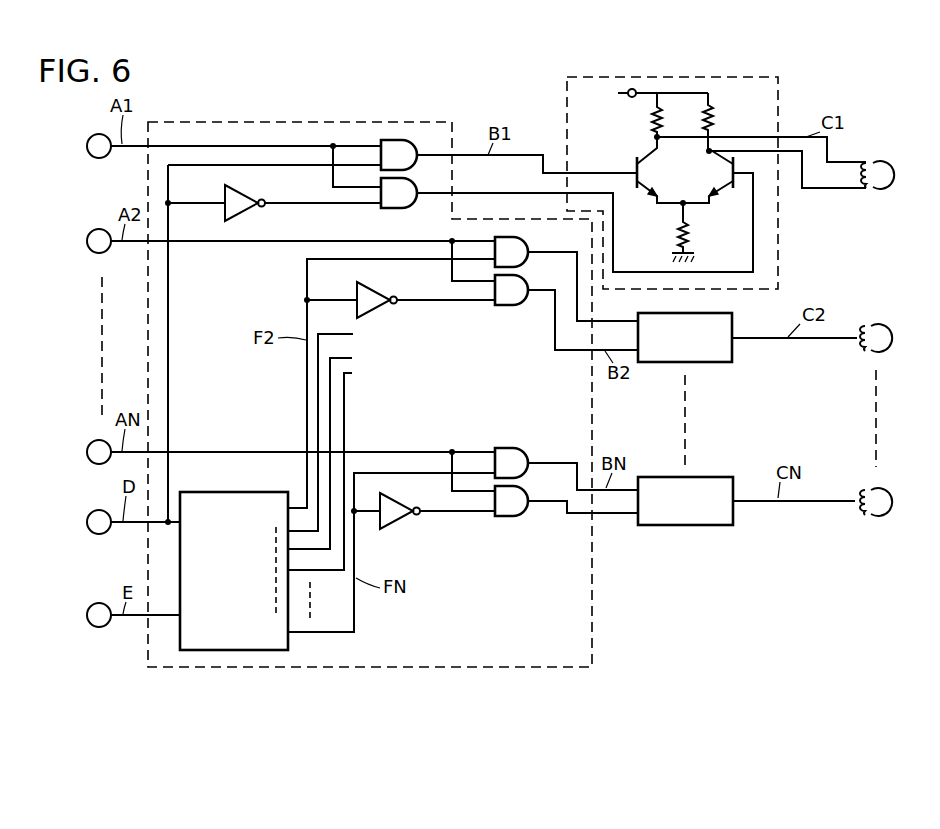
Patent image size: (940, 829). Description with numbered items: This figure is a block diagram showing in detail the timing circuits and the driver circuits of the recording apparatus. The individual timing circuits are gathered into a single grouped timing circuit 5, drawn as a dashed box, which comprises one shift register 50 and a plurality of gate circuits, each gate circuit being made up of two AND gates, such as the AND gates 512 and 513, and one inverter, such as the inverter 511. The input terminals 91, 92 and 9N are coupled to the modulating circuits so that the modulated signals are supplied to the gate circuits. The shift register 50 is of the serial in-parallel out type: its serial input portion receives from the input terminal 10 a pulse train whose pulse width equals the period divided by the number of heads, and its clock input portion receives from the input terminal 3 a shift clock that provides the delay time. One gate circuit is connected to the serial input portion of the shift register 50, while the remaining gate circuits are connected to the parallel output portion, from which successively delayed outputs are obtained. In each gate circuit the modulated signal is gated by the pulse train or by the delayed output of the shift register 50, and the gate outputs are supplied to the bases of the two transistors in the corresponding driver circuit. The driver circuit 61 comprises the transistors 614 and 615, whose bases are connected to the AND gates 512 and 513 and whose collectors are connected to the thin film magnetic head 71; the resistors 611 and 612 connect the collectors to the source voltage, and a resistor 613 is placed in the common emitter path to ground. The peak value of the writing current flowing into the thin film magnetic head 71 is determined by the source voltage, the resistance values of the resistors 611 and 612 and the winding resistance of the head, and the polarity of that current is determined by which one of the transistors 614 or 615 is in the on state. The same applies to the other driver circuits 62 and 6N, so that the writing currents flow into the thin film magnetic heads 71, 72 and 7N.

The input terminal 3 is at (87, 615).
The grouped timing circuit 5 is at (503, 668).
The input terminal 10 is at (87, 522).
The shift register 50 is at (232, 493).
The driver circuit 61 is at (715, 183).
The driver circuit 62 is at (735, 357).
The driver circuit 6N is at (735, 523).
The thin film magnetic head 71 is at (882, 160).
The thin film magnetic head 72 is at (880, 323).
The thin film magnetic head 7N is at (890, 485).
The input terminal 91 is at (87, 146).
The input terminal 92 is at (87, 241).
The input terminal 9N is at (87, 452).
The inverter 511 is at (250, 214).
The AND gate 512 is at (395, 140).
The AND gate 513 is at (398, 209).
The resistor 611 is at (650, 117).
The resistor 612 is at (716, 118).
The resistor 613 is at (677, 231).
The transistor 614 is at (633, 163).
The transistor 615 is at (735, 186).